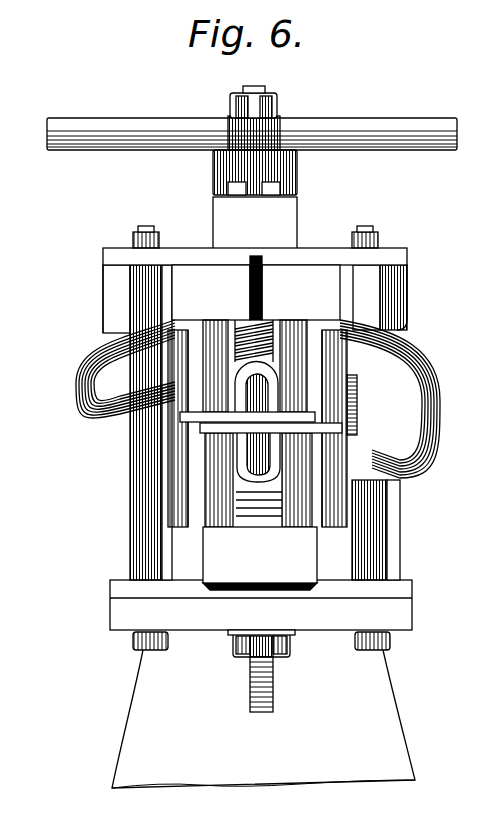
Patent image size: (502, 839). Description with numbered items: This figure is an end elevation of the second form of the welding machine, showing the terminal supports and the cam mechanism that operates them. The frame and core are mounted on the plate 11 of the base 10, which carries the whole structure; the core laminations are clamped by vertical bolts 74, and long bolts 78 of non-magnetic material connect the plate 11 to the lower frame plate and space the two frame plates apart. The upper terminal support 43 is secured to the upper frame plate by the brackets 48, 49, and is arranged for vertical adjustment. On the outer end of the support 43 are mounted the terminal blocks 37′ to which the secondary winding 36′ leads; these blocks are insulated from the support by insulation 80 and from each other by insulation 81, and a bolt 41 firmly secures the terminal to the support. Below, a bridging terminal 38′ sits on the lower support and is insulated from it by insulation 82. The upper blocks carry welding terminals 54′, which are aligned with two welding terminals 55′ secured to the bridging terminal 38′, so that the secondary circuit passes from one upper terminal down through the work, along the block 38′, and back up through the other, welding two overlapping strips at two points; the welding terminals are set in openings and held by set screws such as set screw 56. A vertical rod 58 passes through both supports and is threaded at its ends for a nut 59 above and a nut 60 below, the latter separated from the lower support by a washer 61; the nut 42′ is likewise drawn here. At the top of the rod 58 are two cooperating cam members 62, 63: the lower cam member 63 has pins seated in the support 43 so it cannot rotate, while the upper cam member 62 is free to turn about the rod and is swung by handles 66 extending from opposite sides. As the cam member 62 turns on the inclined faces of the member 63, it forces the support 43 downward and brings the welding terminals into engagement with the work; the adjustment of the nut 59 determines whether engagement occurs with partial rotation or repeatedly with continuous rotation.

The base 10 is at (145, 717).
The plate 11 is at (116, 617).
The secondary winding 36′ is at (90, 347).
The terminal block 37′ is at (208, 268).
The bridging terminal 38′ is at (260, 555).
The bolt 41 is at (240, 186).
The nut 42′ is at (234, 642).
The support 43 is at (294, 212).
The bracket 48 is at (372, 395).
The bracket 49 is at (182, 397).
The welding terminal 54′ is at (214, 330).
The welding terminals 55′ is at (294, 492).
The set screw 56 is at (262, 712).
The rod 58 is at (262, 87).
The nut 59 is at (278, 106).
The nut 60 is at (247, 655).
The washer 61 is at (300, 634).
The cam member 62 is at (297, 160).
The cam member 63 is at (298, 183).
The handles 66 is at (432, 127).
The bolt 74 is at (132, 238).
The bolt 78 is at (133, 642).
The insulation 80 is at (230, 263).
The insulation 81 is at (279, 248).
The insulation 82 is at (256, 598).